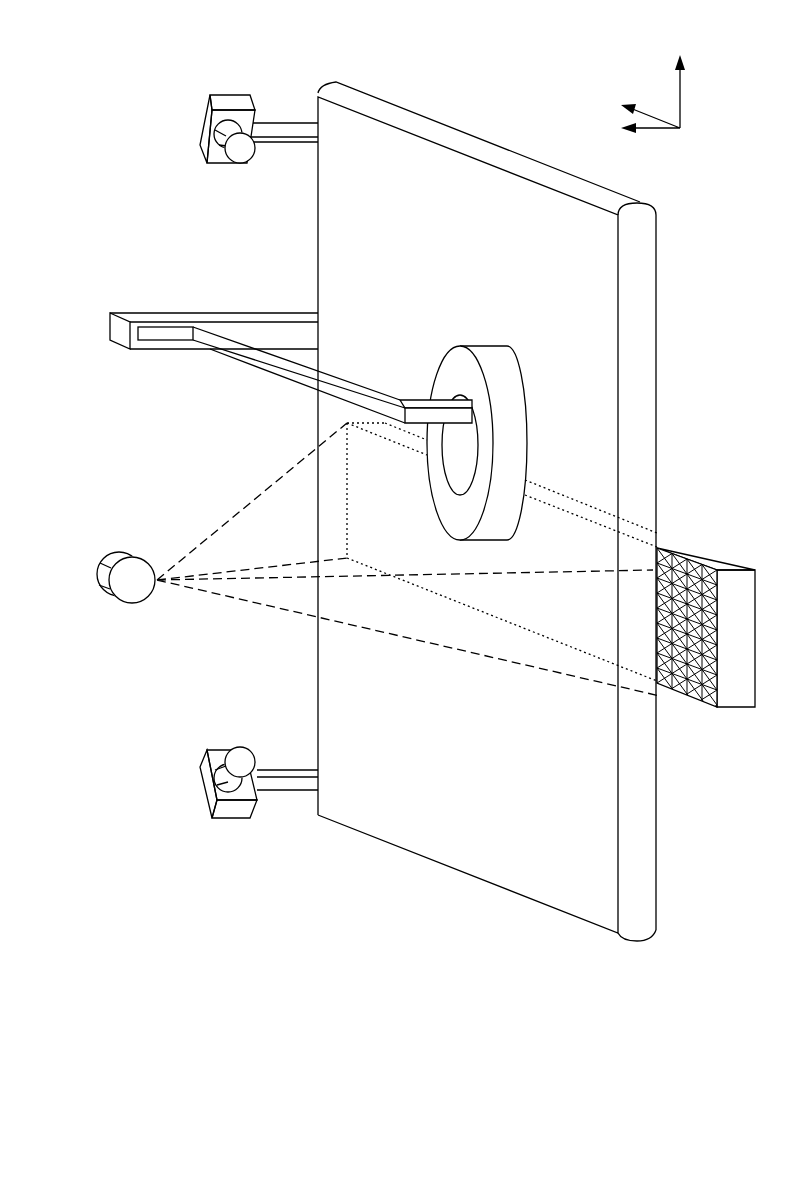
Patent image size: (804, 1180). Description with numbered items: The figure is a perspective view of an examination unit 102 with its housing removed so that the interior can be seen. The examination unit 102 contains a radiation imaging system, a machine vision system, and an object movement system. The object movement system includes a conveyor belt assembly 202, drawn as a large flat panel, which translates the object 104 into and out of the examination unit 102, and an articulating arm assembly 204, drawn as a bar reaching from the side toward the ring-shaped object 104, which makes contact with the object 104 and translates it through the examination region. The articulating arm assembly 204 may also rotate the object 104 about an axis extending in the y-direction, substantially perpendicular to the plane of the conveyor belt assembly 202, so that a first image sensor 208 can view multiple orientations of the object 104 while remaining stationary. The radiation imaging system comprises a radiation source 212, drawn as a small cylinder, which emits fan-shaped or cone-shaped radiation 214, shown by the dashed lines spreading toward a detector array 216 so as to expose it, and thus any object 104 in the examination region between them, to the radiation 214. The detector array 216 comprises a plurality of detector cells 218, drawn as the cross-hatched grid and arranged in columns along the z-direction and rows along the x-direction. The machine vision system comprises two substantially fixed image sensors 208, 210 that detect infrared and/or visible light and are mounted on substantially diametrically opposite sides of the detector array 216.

The examination unit 102 is at (88, 104).
The conveyor belt assembly 202 is at (366, 199).
The articulating arm assembly 204 is at (122, 329).
The object 104 is at (462, 375).
The first image sensor 208 is at (208, 130).
The image sensor 210 is at (208, 788).
The radiation source 212 is at (100, 556).
The radiation 214 is at (207, 535).
The detector array 216 is at (740, 682).
The detector cells 218 is at (658, 642).